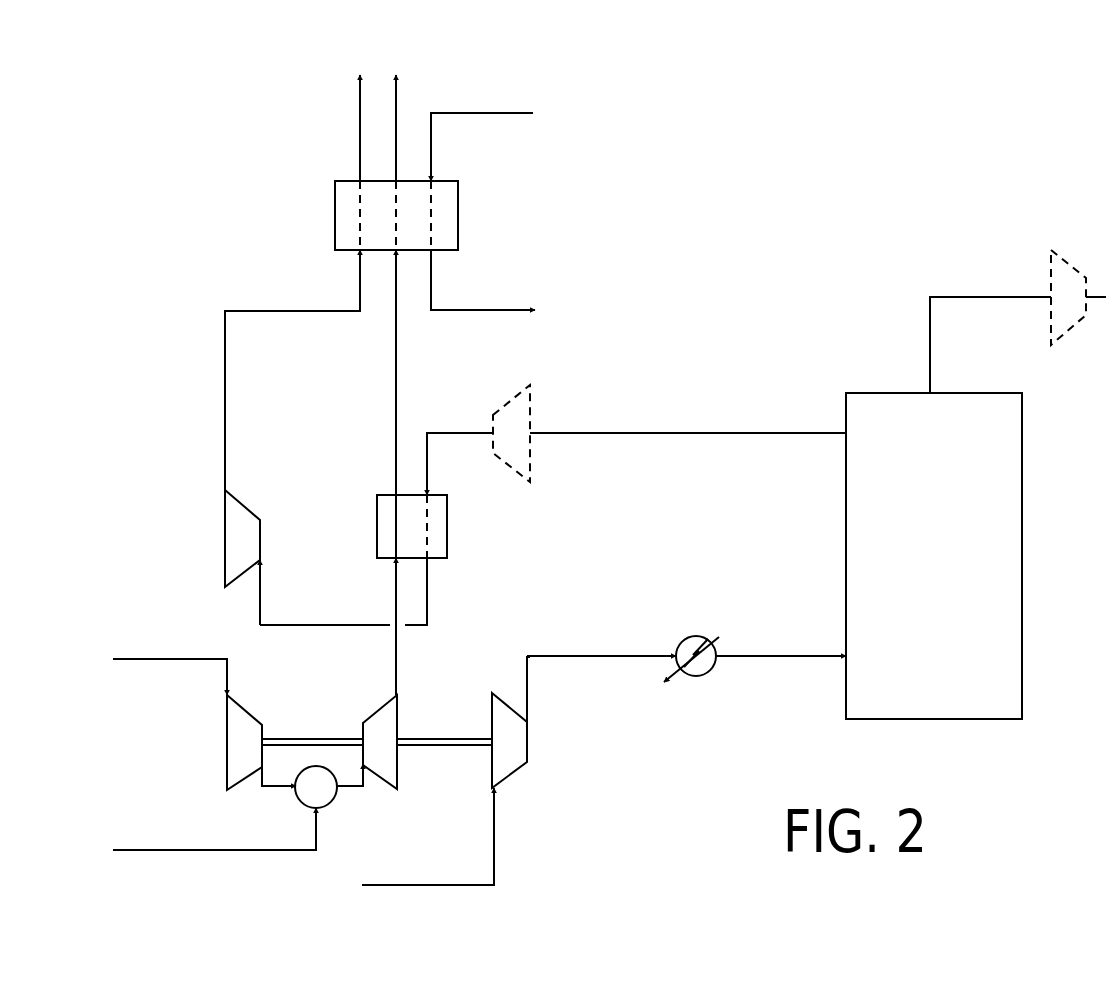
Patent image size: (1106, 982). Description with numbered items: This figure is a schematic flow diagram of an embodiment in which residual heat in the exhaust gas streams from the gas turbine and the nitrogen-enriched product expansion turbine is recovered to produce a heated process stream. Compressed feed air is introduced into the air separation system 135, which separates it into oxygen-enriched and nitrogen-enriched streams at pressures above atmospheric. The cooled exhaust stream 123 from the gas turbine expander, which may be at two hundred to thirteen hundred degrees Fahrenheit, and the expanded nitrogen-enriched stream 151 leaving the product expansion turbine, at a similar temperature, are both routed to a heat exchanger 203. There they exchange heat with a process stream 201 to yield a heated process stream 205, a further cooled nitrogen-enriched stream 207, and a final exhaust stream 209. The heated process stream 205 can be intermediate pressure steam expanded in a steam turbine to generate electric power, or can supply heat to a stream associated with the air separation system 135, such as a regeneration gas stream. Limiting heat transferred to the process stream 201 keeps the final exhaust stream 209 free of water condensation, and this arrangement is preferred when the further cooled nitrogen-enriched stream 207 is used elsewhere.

The cooled exhaust stream 123 is at (396, 367).
The air separation system 135 is at (960, 578).
The expanded nitrogen-enriched stream 151 is at (225, 343).
The process stream 201 is at (480, 113).
The heat exchanger 203 is at (458, 203).
The heated process stream 205 is at (490, 310).
The further cooled nitrogen-enriched stream 207 is at (360, 117).
The final exhaust stream 209 is at (396, 102).